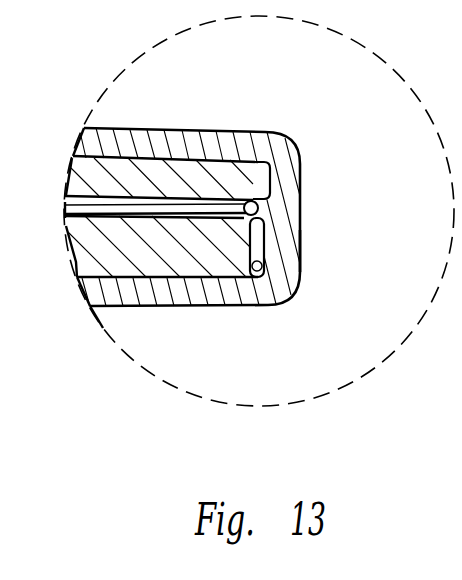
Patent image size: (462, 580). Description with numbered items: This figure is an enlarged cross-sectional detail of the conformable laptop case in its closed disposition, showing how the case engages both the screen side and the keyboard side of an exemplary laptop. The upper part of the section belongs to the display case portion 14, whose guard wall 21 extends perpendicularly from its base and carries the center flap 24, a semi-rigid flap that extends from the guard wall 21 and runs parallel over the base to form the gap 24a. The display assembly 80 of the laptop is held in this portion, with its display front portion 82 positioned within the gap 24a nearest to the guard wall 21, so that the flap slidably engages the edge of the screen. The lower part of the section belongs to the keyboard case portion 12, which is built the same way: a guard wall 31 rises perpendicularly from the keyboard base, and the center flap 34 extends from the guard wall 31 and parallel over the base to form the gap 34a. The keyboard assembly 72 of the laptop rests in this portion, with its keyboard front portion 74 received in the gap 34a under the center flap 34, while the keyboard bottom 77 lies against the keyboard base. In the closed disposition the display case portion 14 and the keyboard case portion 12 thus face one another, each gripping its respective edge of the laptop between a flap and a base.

The keyboard case portion 12 is at (232, 370).
The display case portion 14 is at (297, 100).
The guard wall 21 is at (299, 189).
The center flap 24 is at (258, 203).
The gap 24a is at (271, 176).
The guard wall 31 is at (301, 262).
The center flap 34 is at (266, 238).
The gap 34a is at (263, 277).
The keyboard assembly 72 is at (177, 266).
The keyboard front portion 74 is at (235, 262).
The keyboard bottom 77 is at (117, 266).
The display assembly 80 is at (190, 178).
The display front portion 82 is at (244, 178).